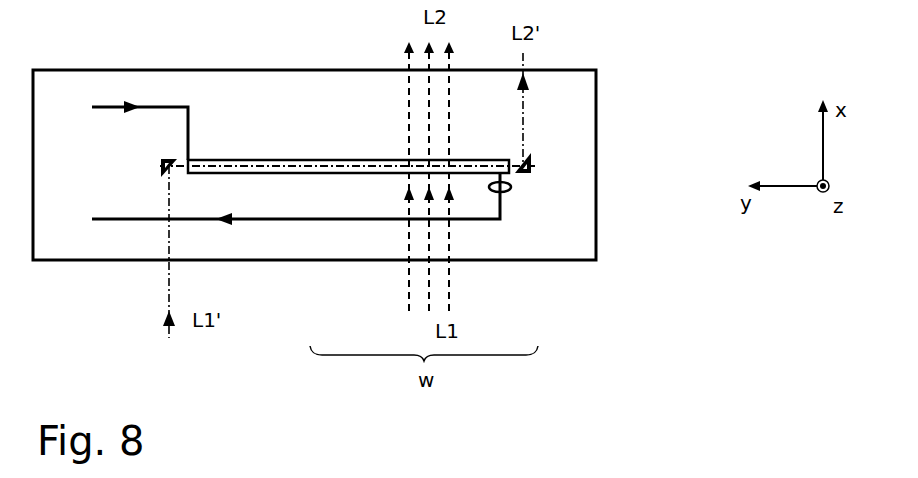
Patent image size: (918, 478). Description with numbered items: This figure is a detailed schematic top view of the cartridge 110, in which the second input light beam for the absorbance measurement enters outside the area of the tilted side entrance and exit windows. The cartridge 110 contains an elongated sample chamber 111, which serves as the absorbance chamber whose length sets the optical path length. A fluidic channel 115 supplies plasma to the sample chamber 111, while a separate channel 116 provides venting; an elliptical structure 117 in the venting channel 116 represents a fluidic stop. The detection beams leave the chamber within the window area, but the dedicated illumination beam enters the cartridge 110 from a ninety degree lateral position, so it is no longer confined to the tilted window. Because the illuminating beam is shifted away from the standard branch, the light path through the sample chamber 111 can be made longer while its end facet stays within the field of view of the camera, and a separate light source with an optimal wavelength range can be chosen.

The cartridge 110 is at (597, 104).
The sample chamber 111 is at (510, 159).
The fluidic channel 115 is at (148, 107).
The venting channel 116 is at (103, 221).
The fluidic stop 117 is at (512, 187).